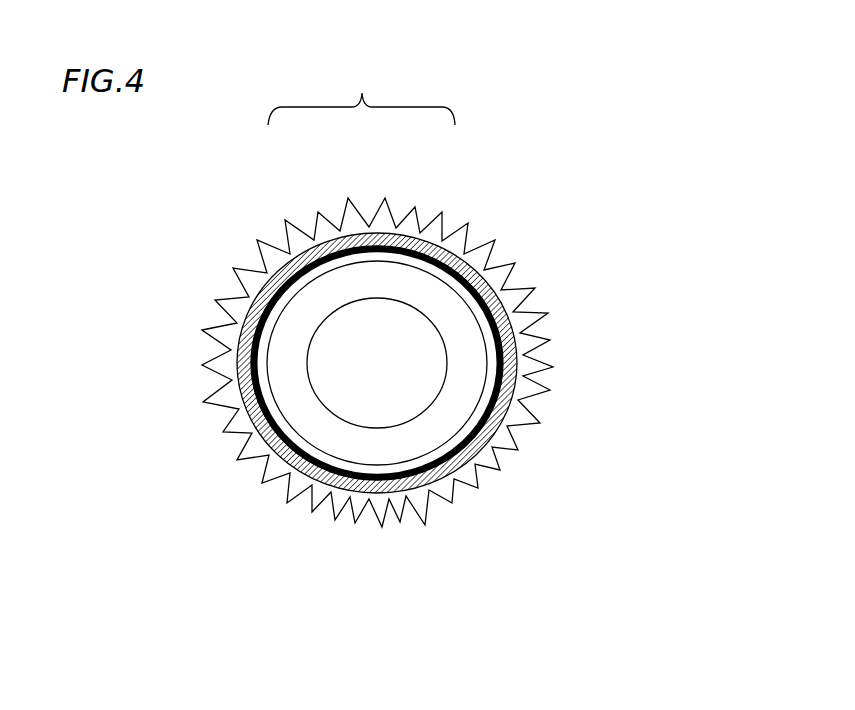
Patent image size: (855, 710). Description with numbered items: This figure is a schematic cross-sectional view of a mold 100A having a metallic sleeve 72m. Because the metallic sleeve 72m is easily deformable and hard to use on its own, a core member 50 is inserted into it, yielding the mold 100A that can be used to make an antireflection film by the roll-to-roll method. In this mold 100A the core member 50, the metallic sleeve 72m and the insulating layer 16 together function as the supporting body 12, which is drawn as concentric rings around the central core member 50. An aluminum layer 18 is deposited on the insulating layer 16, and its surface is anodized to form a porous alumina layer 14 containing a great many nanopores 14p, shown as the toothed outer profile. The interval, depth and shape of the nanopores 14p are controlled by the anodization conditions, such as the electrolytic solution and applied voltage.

The mold 100A is at (551, 187).
The supporting body 12 is at (362, 93).
The metallic sleeve 72m is at (311, 240).
The core member 50 is at (370, 270).
The insulating layer 16 is at (405, 266).
The porous alumina layer 14 is at (540, 318).
The nanopores 14p is at (503, 257).
The aluminum layer 18 is at (530, 372).